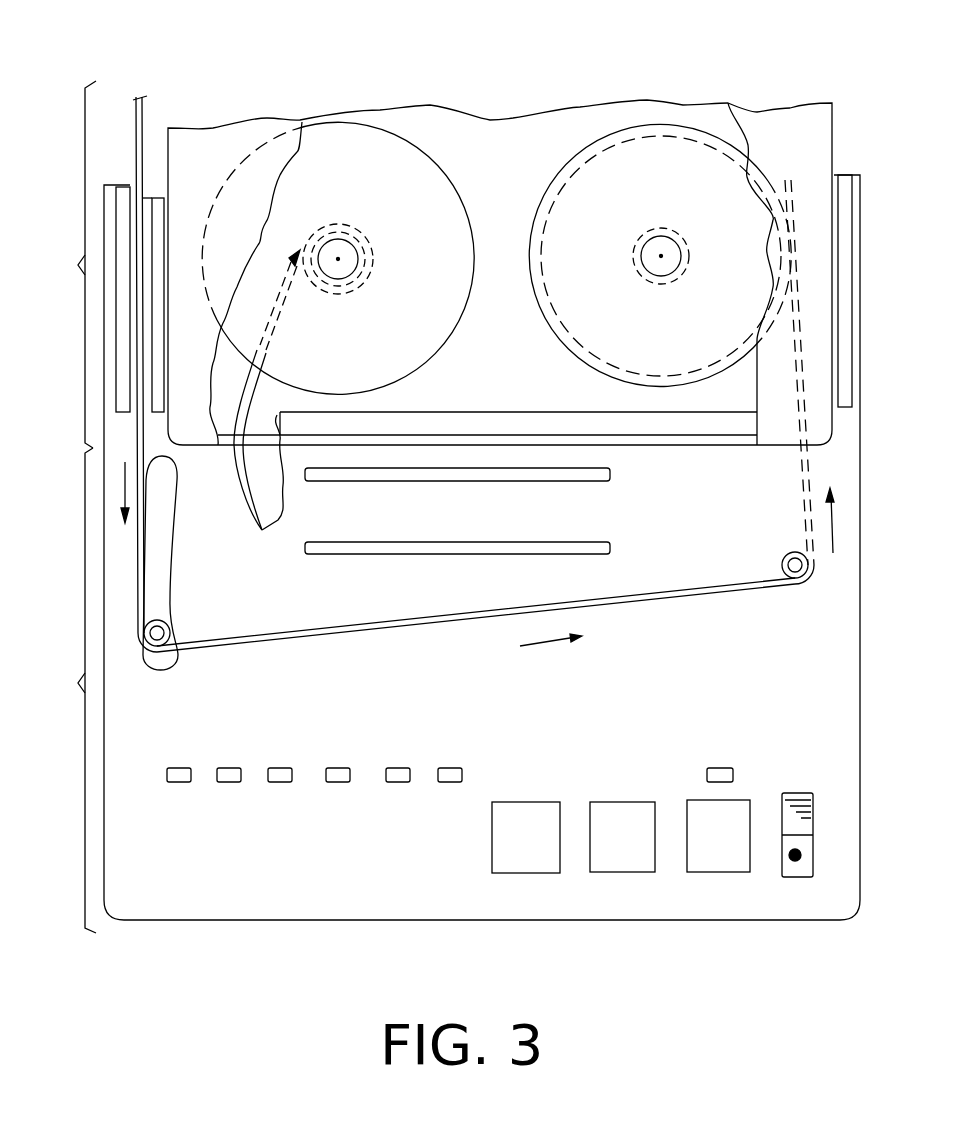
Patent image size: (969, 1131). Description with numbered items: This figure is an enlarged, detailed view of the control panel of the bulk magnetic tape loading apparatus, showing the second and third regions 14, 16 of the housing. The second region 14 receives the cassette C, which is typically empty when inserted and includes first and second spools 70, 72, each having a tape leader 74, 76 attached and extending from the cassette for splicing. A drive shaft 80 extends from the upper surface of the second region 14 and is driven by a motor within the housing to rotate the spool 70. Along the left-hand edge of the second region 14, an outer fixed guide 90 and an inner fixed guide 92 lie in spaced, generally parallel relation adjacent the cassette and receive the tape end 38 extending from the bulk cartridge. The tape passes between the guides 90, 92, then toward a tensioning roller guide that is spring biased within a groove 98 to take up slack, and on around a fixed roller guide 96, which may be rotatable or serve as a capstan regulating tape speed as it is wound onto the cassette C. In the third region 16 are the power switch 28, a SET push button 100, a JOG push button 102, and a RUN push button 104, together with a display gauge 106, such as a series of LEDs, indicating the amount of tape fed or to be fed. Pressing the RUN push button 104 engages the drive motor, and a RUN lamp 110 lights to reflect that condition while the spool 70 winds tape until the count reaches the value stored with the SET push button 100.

The second region 14 is at (69, 264).
The third region 16 is at (451, 554).
The power switch 28 is at (793, 867).
The tape end 38 is at (432, 622).
The first spool 70 is at (651, 158).
The second spool 72 is at (340, 174).
The tape leader 74 is at (797, 470).
The tape leader 76 is at (263, 488).
The drive shaft 80 is at (663, 237).
The outer fixed guide 90 is at (125, 193).
The inner fixed guide 92 is at (155, 205).
The fixed roller guide 96 is at (790, 556).
The groove 98 is at (155, 538).
The SET push button 100 is at (528, 860).
The JOG push button 102 is at (618, 860).
The RUN push button 104 is at (708, 858).
The display gauge 106 is at (365, 748).
The RUN lamp 110 is at (715, 760).
The cassette C is at (508, 150).